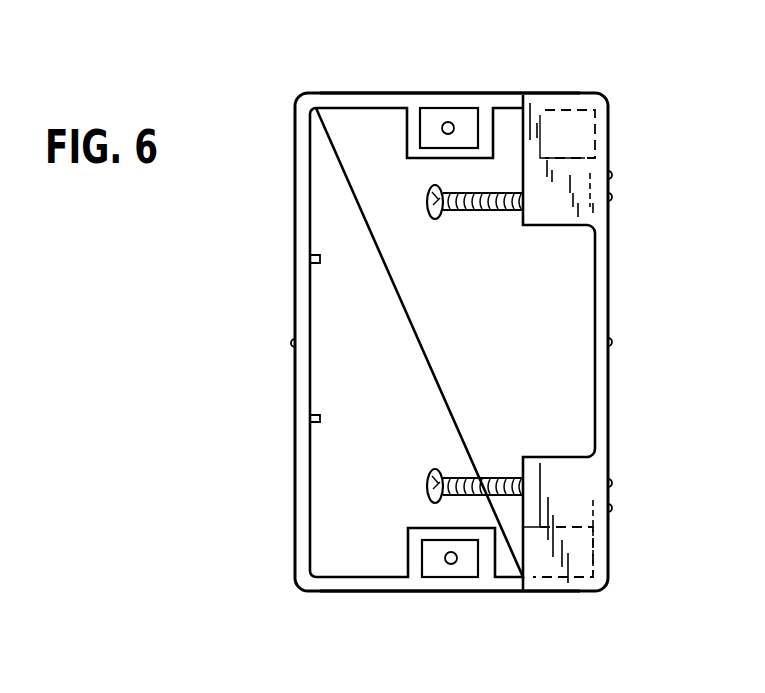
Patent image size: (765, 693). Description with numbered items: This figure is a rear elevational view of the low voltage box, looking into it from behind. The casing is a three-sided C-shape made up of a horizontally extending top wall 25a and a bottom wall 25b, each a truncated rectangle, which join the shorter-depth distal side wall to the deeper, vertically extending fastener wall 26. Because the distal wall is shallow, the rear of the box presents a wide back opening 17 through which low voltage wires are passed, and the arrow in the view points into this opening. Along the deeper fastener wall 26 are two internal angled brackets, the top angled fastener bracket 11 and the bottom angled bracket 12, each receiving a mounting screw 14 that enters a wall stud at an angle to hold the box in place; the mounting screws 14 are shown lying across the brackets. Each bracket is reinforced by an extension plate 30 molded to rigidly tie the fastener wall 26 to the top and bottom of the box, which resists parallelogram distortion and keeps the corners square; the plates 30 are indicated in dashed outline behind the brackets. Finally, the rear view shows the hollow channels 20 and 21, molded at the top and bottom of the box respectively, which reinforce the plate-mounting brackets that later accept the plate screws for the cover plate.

The fastener wall 26 is at (608, 328).
The back opening 17 is at (341, 318).
The bottom wall 25b is at (371, 93).
The top wall 25a is at (393, 591).
The hollow channel 21 is at (465, 117).
The hollow channel 20 is at (472, 568).
The bottom angled bracket 12 is at (593, 207).
The top angled fastener bracket 11 is at (577, 478).
The extension plate 30 is at (597, 128).
The mounting screws 14 is at (427, 200).